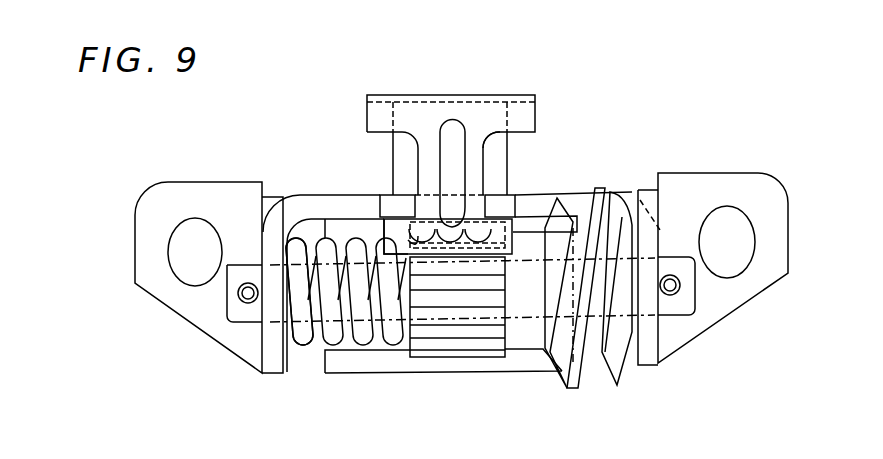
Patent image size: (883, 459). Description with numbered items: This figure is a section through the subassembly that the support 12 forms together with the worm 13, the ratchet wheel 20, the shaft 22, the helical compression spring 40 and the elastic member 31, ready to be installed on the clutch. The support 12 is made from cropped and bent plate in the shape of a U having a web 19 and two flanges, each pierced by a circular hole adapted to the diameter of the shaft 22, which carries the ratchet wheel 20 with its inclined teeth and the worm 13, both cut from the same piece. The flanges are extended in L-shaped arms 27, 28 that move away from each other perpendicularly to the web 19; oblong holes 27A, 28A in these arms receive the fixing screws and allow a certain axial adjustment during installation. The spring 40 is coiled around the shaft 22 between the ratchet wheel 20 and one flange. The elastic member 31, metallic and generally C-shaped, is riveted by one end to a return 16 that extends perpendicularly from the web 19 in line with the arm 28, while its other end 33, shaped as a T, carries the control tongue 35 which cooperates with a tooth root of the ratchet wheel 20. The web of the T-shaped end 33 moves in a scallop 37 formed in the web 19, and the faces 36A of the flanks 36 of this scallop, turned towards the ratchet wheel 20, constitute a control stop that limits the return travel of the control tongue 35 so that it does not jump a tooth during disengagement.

The support 12 is at (300, 191).
The worm 13 is at (567, 391).
The return 16 is at (385, 362).
The web 19 is at (568, 192).
The ratchet wheel 20 is at (475, 358).
The shaft 22 is at (683, 305).
The arm 27 is at (147, 252).
The oblong hole 27A is at (195, 222).
The arm 28 is at (778, 240).
The oblong hole 28A is at (727, 212).
The elastic member 31 is at (538, 99).
The end 33 is at (425, 158).
The control tongue 35 is at (512, 243).
The flanks 36 is at (383, 207).
The faces 36A is at (450, 220).
The scallop 37 is at (485, 180).
The helical compression spring 40 is at (303, 358).